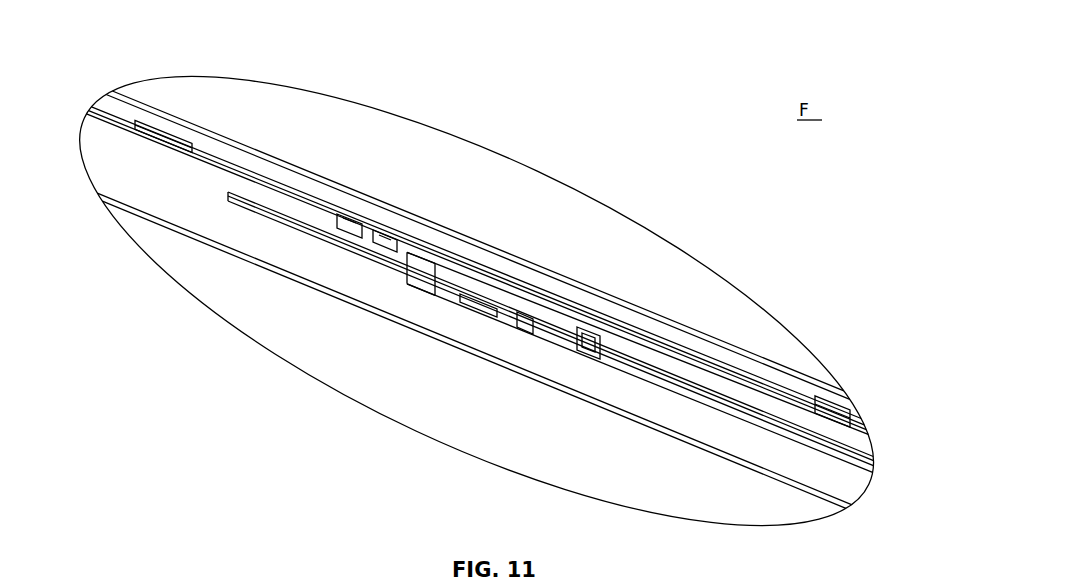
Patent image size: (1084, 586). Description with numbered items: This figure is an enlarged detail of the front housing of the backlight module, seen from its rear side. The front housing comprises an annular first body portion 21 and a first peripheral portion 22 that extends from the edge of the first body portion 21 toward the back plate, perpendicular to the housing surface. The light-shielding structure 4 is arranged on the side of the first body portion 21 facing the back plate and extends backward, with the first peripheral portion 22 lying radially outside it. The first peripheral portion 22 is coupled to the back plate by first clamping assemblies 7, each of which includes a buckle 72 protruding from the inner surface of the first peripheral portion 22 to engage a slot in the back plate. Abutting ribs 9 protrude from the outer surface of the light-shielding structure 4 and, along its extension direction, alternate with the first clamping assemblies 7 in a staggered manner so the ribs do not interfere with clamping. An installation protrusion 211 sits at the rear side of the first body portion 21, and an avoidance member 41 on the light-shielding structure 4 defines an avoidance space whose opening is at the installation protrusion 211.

The first clamping assembly 7 is at (526, 244).
The buckle 72 is at (172, 140).
The abutting rib 9 is at (333, 227).
The avoidance member 41 is at (462, 293).
The first peripheral portion 22 is at (548, 308).
The installation protrusion 211 is at (600, 330).
The light-shielding structure 4 is at (660, 370).
The first body portion 21 is at (400, 322).